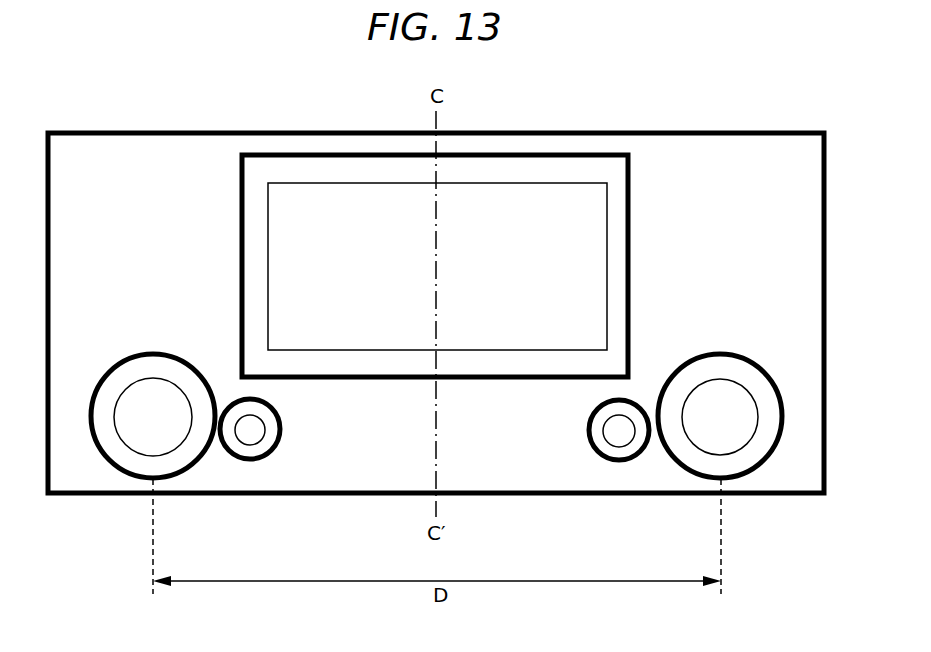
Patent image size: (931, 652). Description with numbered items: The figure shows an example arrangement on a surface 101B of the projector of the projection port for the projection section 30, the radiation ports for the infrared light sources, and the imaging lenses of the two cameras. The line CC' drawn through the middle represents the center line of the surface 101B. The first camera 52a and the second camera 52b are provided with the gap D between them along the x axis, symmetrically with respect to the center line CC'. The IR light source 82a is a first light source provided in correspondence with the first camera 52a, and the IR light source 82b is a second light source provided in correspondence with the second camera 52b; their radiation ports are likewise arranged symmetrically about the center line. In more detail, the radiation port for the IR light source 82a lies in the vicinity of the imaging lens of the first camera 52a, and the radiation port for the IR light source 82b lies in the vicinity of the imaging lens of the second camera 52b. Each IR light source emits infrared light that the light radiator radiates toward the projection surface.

The surface 101B is at (345, 497).
The projection section 30 is at (337, 380).
The first camera 52a is at (120, 477).
The IR light source 82a is at (243, 460).
The second camera 52b is at (692, 477).
The IR light source 82b is at (613, 463).